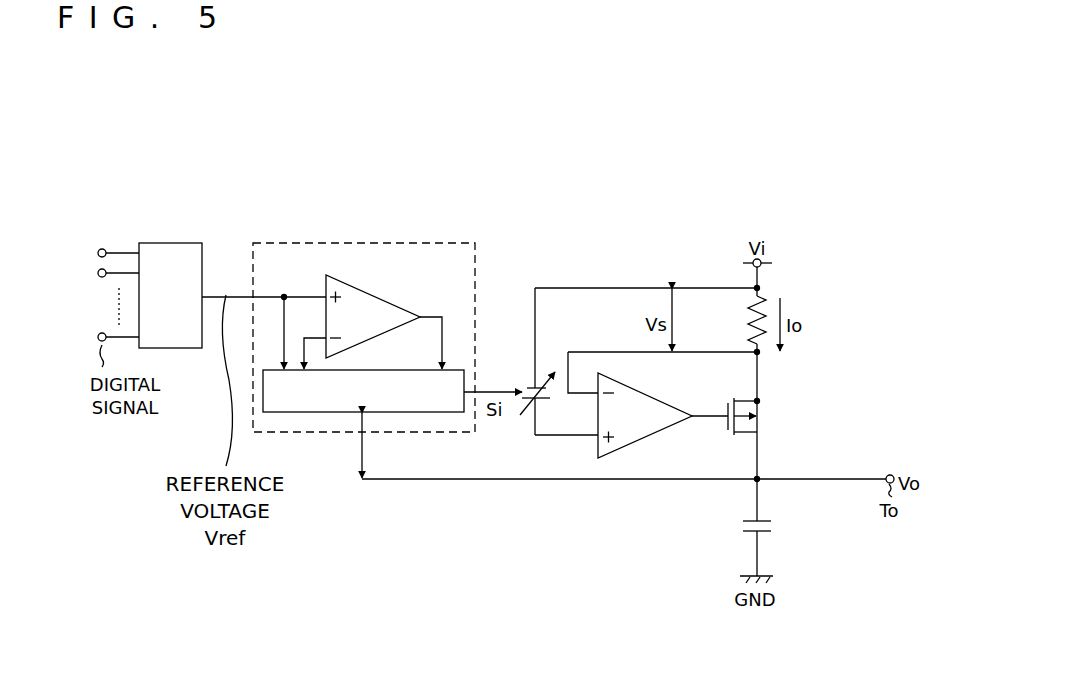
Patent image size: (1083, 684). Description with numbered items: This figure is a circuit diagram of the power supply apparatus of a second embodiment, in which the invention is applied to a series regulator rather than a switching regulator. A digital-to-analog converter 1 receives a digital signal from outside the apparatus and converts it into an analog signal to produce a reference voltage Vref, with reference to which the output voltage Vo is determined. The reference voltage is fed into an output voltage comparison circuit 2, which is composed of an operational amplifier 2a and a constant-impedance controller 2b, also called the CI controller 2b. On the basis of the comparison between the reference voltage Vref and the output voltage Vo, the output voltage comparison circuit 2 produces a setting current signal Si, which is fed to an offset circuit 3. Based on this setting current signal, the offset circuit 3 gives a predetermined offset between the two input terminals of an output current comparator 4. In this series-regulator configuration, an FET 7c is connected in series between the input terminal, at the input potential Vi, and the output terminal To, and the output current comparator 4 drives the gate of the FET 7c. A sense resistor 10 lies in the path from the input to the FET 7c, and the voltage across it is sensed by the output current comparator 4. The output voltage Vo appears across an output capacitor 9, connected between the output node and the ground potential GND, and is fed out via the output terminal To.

The digital-to-analog converter 1 is at (172, 243).
The output voltage comparison circuit 2 is at (366, 243).
The operational amplifier 2a is at (370, 294).
The constant-impedance controller 2b is at (402, 370).
The offset circuit 3 is at (531, 388).
The output current comparator 4 is at (642, 392).
The FET 7c is at (728, 432).
The output capacitor 9 is at (772, 527).
The resistor 10 is at (748, 328).